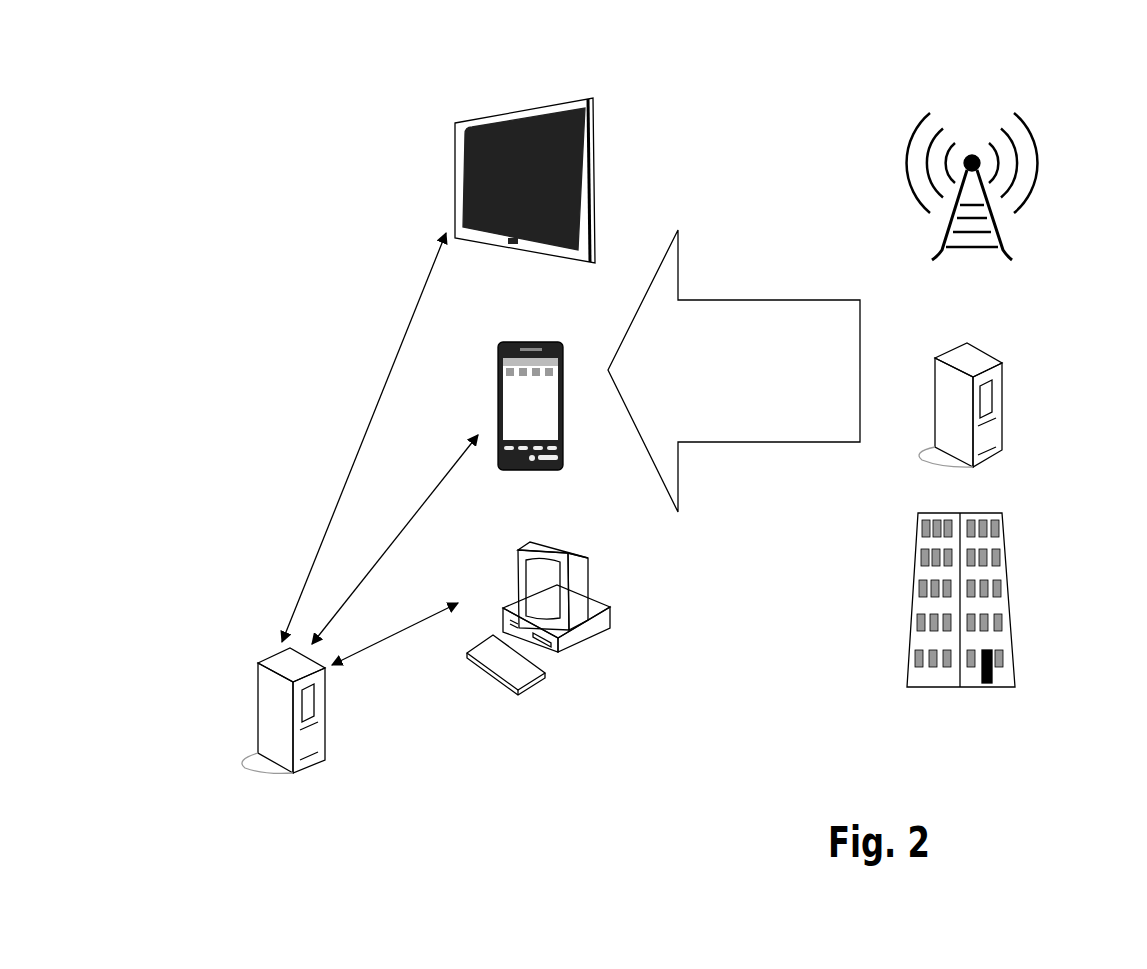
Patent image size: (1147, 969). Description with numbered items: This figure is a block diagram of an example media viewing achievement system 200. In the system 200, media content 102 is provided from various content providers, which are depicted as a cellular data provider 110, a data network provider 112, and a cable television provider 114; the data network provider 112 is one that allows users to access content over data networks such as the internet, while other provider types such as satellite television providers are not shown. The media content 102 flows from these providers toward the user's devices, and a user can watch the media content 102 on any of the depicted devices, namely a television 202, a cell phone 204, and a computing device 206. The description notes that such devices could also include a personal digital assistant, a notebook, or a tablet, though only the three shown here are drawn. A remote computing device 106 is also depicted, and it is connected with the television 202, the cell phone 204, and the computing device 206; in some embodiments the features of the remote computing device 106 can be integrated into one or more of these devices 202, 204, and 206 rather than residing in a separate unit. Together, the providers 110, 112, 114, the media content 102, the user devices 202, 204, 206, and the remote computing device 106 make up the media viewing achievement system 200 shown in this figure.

The media viewing achievement system 200 is at (223, 39).
The media content 102 is at (767, 302).
The remote computing device 106 is at (257, 708).
The cellular data provider 110 is at (1045, 135).
The data network provider 112 is at (1013, 390).
The cable television provider 114 is at (1018, 562).
The television 202 is at (455, 168).
The cell phone 204 is at (510, 377).
The computing device 206 is at (517, 573).